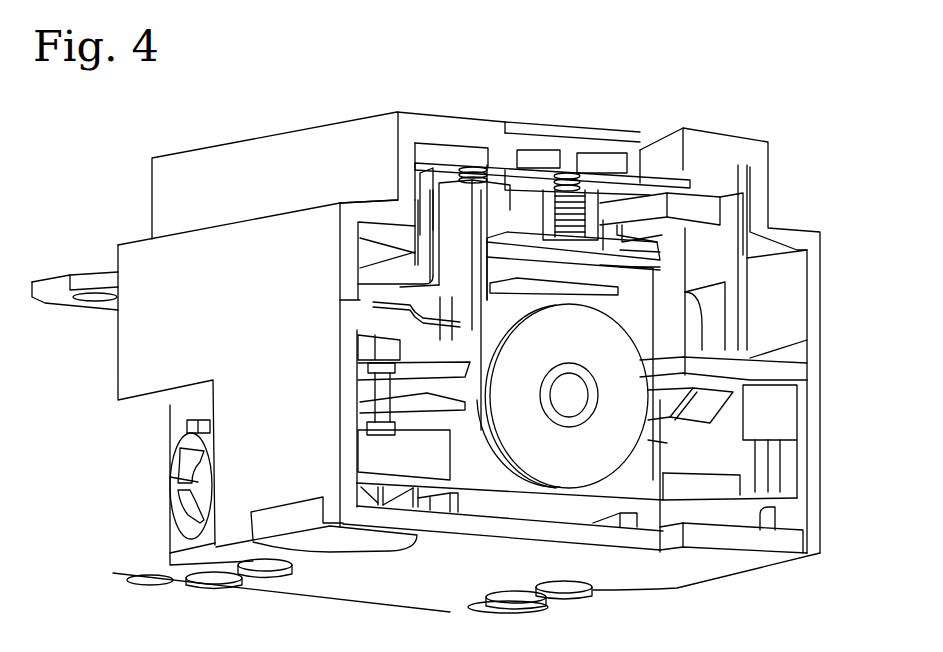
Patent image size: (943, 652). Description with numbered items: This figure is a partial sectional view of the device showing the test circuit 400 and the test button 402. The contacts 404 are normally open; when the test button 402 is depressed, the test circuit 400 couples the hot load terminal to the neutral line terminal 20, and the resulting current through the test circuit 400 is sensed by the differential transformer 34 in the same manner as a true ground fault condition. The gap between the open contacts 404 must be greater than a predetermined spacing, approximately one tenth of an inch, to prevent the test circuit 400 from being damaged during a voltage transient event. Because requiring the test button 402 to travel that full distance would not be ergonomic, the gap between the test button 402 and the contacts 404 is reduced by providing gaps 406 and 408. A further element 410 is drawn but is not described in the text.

The test circuit 400 is at (619, 56).
The test button 402 is at (538, 135).
The contacts 404 is at (593, 163).
The gap 406 is at (460, 177).
The gap 408 is at (678, 192).
The support block 410 is at (722, 195).
The neutral line terminal 20 is at (178, 470).
The differential transformer 34 is at (588, 462).